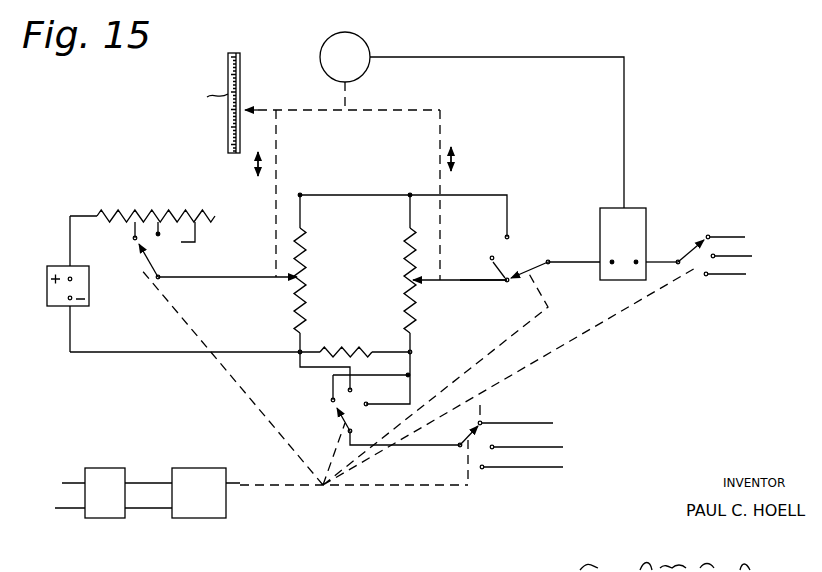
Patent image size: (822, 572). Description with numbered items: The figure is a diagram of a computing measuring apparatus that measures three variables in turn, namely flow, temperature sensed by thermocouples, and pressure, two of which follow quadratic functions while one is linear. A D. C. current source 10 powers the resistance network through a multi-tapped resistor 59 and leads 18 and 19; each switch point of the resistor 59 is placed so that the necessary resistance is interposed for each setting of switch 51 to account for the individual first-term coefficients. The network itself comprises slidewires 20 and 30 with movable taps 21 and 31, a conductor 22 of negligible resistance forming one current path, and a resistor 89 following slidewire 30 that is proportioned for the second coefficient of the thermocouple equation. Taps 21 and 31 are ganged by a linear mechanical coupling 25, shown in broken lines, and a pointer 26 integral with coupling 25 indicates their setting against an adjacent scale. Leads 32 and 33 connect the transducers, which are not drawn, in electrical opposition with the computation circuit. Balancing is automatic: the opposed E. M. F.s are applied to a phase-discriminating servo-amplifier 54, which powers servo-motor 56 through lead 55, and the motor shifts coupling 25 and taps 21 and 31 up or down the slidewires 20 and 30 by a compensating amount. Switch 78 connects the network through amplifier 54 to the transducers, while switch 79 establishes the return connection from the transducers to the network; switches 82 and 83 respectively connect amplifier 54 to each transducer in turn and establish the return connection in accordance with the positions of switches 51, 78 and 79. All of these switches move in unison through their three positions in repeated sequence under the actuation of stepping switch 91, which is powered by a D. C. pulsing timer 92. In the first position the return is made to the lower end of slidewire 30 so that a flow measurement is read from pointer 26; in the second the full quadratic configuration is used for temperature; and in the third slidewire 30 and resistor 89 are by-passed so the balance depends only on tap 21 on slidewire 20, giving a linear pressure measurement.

The current source 10 is at (47, 296).
The lead 18 is at (68, 242).
The lead 19 is at (135, 355).
The slidewire 20 is at (306, 285).
The movable tap 21 is at (291, 286).
The conductor 22 is at (356, 197).
The linear mechanical coupling 25 is at (370, 110).
The pointer 26 is at (254, 108).
The slidewire 30 is at (404, 268).
The movable tap 31 is at (426, 284).
The lead 32 is at (412, 447).
The lead 33 is at (472, 284).
The switch 51 is at (150, 252).
The servo-amplifier 54 is at (646, 232).
The lead 55 is at (626, 136).
The servo-motor 56 is at (366, 42).
The multi-tapped resistor 59 is at (115, 216).
The switch 78 is at (541, 262).
The switch 79 is at (352, 416).
The switch 82 is at (694, 246).
The switch 83 is at (474, 431).
The resistor 89 is at (350, 346).
The stepping switch 91 is at (226, 508).
The D. C. pulsing timer 92 is at (102, 519).